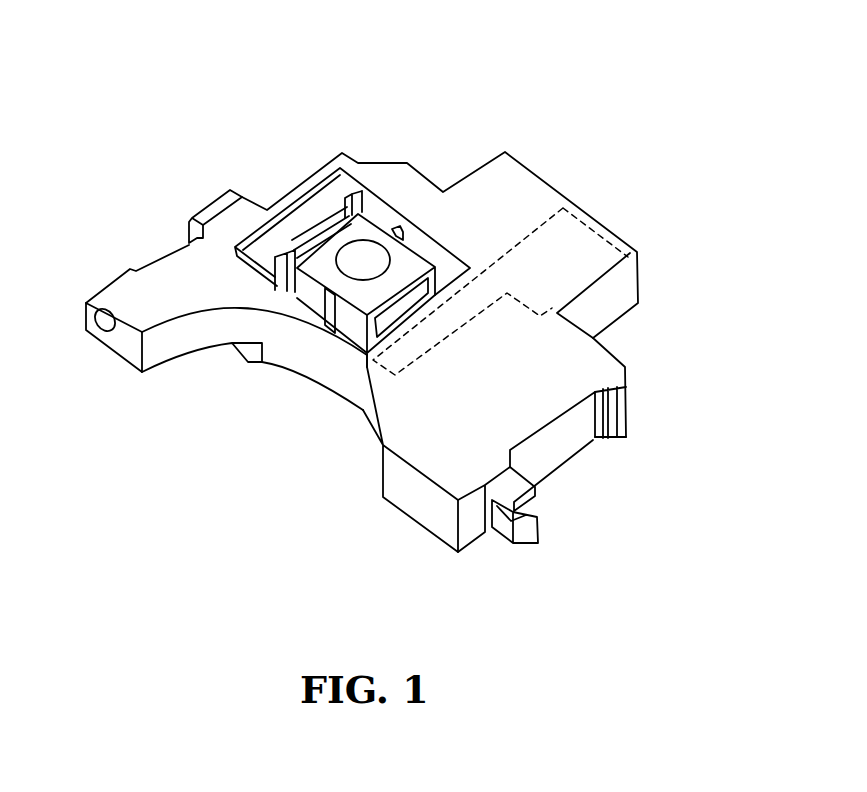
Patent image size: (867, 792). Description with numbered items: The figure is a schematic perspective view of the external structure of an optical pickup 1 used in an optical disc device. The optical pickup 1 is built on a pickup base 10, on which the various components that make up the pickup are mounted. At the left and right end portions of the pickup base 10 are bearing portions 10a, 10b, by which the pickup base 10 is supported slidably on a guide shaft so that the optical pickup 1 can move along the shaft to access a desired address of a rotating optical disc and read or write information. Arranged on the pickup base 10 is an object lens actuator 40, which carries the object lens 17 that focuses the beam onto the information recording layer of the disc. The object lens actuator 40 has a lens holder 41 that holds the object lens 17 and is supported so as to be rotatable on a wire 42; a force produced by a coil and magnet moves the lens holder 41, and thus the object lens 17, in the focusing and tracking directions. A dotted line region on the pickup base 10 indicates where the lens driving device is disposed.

The optical pickup 1 is at (178, 113).
The pickup base 10 is at (532, 182).
The bearing portion 10a is at (115, 287).
The bearing portion 10b is at (507, 543).
The object lens 17 is at (363, 260).
The object lens actuator 40 is at (322, 208).
The lens holder 41 is at (323, 267).
The wire 42 is at (285, 287).